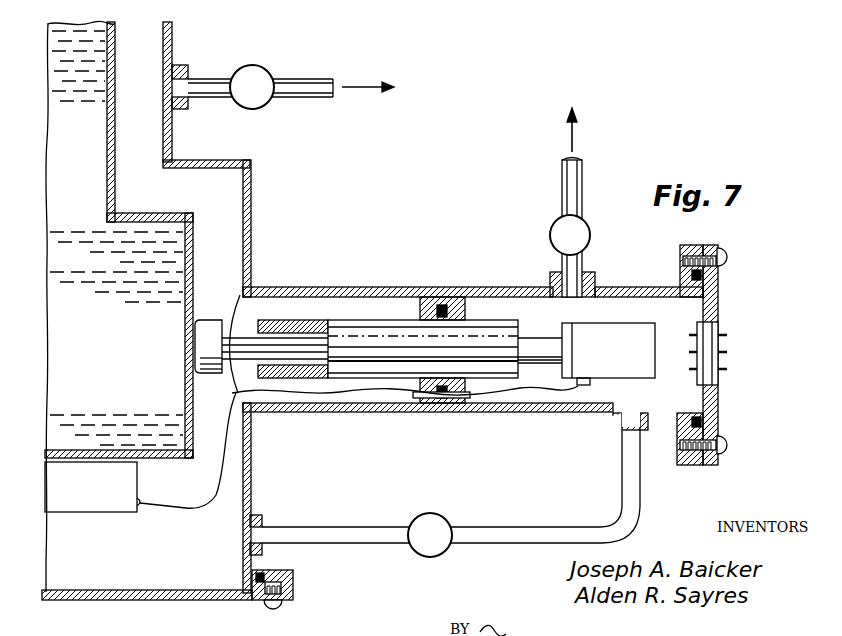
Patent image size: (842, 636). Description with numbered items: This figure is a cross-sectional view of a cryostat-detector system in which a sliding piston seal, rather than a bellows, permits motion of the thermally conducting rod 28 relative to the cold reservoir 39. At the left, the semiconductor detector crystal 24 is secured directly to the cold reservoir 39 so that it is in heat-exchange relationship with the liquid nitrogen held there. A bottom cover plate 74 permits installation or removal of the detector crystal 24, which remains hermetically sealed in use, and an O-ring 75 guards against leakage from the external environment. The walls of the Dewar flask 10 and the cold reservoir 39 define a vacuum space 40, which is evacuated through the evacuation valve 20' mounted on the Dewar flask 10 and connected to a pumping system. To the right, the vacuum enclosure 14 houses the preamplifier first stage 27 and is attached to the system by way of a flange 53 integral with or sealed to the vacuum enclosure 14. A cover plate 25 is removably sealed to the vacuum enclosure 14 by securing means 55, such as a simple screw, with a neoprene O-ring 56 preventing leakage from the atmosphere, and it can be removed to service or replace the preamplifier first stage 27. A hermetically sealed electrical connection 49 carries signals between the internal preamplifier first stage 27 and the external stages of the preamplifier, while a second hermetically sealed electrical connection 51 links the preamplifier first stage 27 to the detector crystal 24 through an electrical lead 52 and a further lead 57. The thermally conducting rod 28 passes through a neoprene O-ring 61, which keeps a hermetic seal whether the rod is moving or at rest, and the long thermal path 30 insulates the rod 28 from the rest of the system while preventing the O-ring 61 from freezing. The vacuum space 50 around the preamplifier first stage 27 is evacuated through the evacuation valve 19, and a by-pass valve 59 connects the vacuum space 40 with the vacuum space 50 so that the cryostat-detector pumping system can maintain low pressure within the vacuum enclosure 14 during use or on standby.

The Dewar flask 10 is at (172, 146).
The vacuum enclosure 14 is at (663, 290).
The evacuation valve 19 is at (588, 244).
The evacuation valve 20' is at (329, 78).
The semiconductor detector crystal 24 is at (100, 488).
The cover plate 25 is at (718, 410).
The preamplifier first stage 27 is at (608, 354).
The thermally conducting rod 28 is at (210, 330).
The long thermal path 30 is at (279, 320).
The cold reservoir 39 is at (113, 134).
The vacuum space 40 is at (222, 186).
The hermetically sealed electrical connection 49 is at (712, 345).
The vacuum space 50 is at (530, 290).
The hermetically sealed electrical connection 51 is at (438, 405).
The electrical lead 52 is at (531, 396).
The flange 53 is at (690, 246).
The securing means 55 is at (722, 256).
The neoprene O-ring 56 is at (702, 422).
The lead 57 is at (180, 512).
The by-pass valve 59 is at (424, 553).
The neoprene O-ring 61 is at (443, 304).
The bottom cover plate 74 is at (165, 601).
The O-ring 75 is at (262, 598).